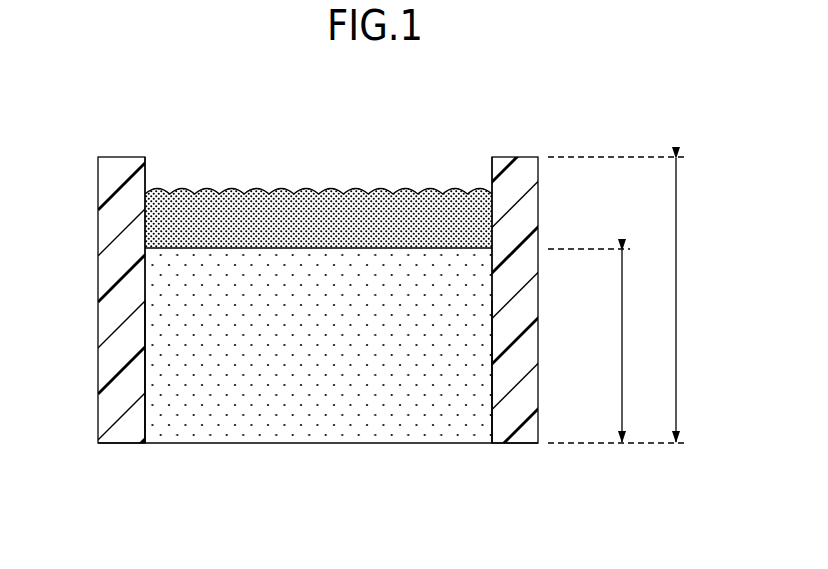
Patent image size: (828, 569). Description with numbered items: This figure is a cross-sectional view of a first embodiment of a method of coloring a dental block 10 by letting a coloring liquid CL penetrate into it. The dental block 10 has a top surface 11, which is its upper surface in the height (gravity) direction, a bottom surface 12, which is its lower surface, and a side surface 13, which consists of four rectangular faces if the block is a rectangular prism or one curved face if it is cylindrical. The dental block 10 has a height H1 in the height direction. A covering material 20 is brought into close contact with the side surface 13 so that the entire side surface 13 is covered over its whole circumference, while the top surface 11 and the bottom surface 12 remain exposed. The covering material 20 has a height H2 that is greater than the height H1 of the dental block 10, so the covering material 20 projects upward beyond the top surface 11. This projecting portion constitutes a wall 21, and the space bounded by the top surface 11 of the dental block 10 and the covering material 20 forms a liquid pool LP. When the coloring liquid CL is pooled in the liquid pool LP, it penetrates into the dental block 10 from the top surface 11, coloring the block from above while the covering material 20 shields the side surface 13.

The dental block 10 is at (458, 330).
The top surface 11 is at (259, 247).
The bottom surface 12 is at (348, 444).
The side surface 13 is at (145, 374).
The covering material 20 is at (515, 232).
The wall 21 is at (145, 172).
The coloring liquid CL is at (358, 190).
The liquid pool LP is at (492, 222).
The height of the dental block H1 is at (641, 346).
The height of the covering material H2 is at (695, 300).